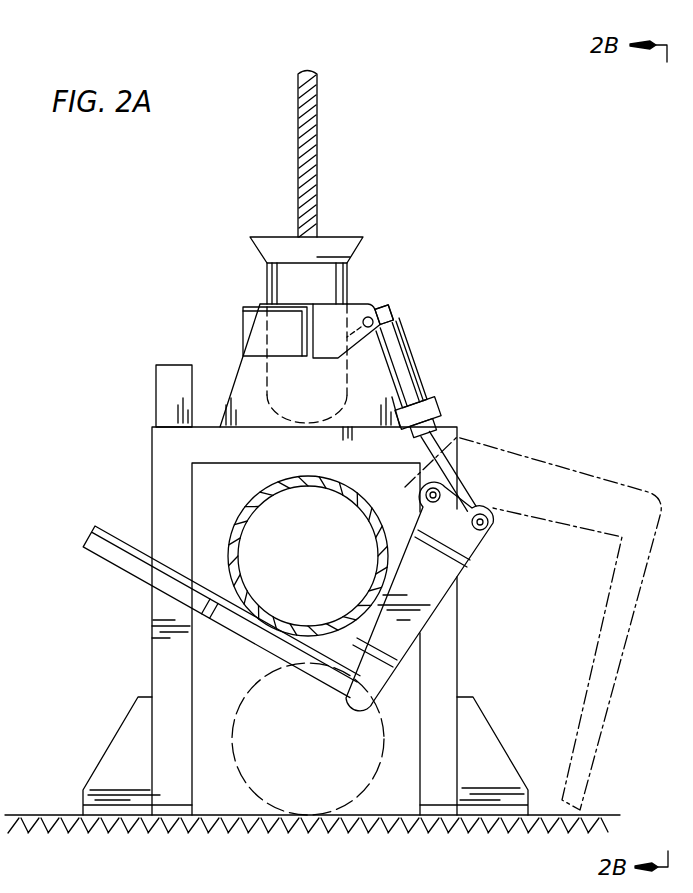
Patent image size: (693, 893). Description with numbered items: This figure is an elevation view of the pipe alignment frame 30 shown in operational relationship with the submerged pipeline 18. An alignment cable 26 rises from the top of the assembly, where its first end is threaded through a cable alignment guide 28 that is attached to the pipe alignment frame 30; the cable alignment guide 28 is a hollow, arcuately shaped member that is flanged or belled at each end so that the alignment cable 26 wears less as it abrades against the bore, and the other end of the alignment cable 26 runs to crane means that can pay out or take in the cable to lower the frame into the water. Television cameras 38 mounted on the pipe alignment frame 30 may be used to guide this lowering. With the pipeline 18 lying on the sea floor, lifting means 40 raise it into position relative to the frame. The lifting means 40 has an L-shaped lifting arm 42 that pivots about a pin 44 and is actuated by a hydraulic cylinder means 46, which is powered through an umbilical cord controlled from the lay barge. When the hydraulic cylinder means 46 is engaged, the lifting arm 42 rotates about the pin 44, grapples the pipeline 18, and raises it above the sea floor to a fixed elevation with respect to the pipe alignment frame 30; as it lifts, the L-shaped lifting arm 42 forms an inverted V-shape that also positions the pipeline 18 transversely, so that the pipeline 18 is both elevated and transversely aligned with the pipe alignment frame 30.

The pipeline 18 is at (243, 508).
The alignment cable 26 is at (317, 128).
The cable alignment guide 28 is at (348, 279).
The pipe alignment frame 30 is at (152, 648).
The television cameras 38 is at (167, 364).
The lifting means 40 is at (445, 392).
The L-shaped lifting arm 42 is at (463, 573).
The pin 44 is at (442, 497).
The hydraulic cylinder means 46 is at (408, 348).